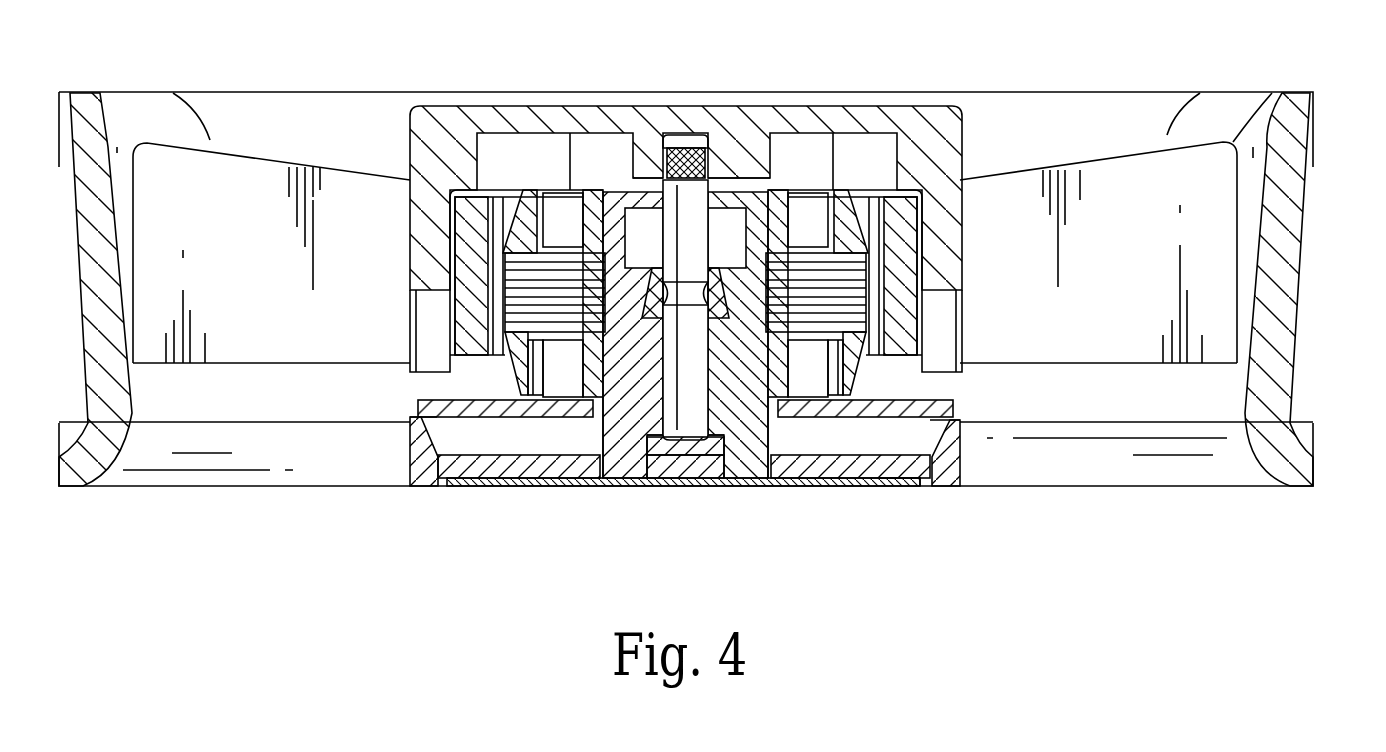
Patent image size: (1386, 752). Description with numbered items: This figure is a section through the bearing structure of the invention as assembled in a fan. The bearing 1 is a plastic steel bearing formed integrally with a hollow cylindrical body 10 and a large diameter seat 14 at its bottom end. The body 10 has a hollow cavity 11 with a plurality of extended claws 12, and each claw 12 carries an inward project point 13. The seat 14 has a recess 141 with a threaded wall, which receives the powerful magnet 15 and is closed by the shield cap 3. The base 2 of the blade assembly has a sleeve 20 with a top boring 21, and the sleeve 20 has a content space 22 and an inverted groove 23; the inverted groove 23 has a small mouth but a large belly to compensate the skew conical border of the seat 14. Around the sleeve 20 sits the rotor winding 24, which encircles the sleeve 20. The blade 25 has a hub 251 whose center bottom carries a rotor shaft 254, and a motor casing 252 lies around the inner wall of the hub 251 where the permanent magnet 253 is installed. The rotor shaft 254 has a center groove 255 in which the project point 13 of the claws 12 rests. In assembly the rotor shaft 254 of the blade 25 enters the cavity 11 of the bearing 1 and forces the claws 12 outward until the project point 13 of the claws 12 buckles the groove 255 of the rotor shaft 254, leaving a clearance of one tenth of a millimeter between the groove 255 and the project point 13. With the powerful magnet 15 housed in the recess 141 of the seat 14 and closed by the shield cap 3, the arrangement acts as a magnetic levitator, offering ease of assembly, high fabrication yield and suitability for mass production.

The plastic steel bearing 1 is at (748, 486).
The base 2 is at (880, 487).
The shield cap 3 is at (910, 487).
The hollow cylindrical body 10 is at (647, 350).
The cavity 11 is at (647, 440).
The extended claws 12 is at (600, 292).
The project point 13 is at (707, 290).
The large diameter seat 14 is at (607, 485).
The powerful magnet 15 is at (688, 436).
The sleeve 20 is at (590, 262).
The top boring 21 is at (670, 225).
The content space 22 is at (740, 215).
The inverted groove 23 is at (773, 462).
The rotor winding 24 is at (520, 352).
The blade 25 is at (1232, 188).
The recess 141 is at (650, 432).
The hub 251 is at (692, 165).
The motor casing 252 is at (855, 260).
The permanent magnet 253 is at (952, 330).
The rotor shaft 254 is at (637, 215).
The center groove 255 is at (600, 192).